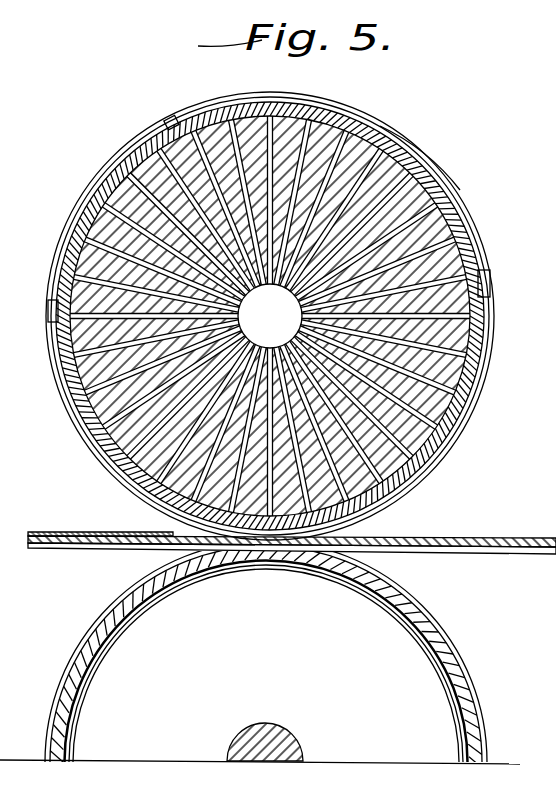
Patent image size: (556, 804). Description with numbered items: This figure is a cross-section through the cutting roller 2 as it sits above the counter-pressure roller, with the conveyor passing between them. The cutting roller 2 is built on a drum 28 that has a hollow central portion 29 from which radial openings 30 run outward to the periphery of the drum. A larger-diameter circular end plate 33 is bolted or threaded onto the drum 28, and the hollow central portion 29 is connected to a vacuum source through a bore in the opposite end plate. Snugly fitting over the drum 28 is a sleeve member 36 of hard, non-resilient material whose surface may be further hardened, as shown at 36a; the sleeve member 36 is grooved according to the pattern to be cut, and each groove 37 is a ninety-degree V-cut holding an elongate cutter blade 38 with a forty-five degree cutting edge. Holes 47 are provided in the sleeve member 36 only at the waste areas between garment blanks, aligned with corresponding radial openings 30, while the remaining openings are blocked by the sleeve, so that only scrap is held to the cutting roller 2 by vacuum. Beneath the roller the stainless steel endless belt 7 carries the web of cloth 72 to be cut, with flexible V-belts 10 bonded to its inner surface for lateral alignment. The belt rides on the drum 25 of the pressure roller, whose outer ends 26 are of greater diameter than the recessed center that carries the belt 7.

The cutting roller 2 is at (473, 166).
The endless belt 7 is at (505, 538).
The flexible V-belts 10 is at (520, 552).
The drum 25 is at (455, 661).
The outer ends 26 is at (470, 699).
The drum 28 is at (443, 257).
The hollow central portion 29 is at (286, 328).
The radial openings 30 is at (483, 340).
The circular end plate 33 is at (467, 220).
The sleeve member 36 is at (450, 208).
The hardened surface 36a is at (423, 160).
The groove 37 is at (478, 282).
The cutter blade 38 is at (162, 116).
The holes 47 is at (147, 141).
The web of cloth 72 is at (64, 530).